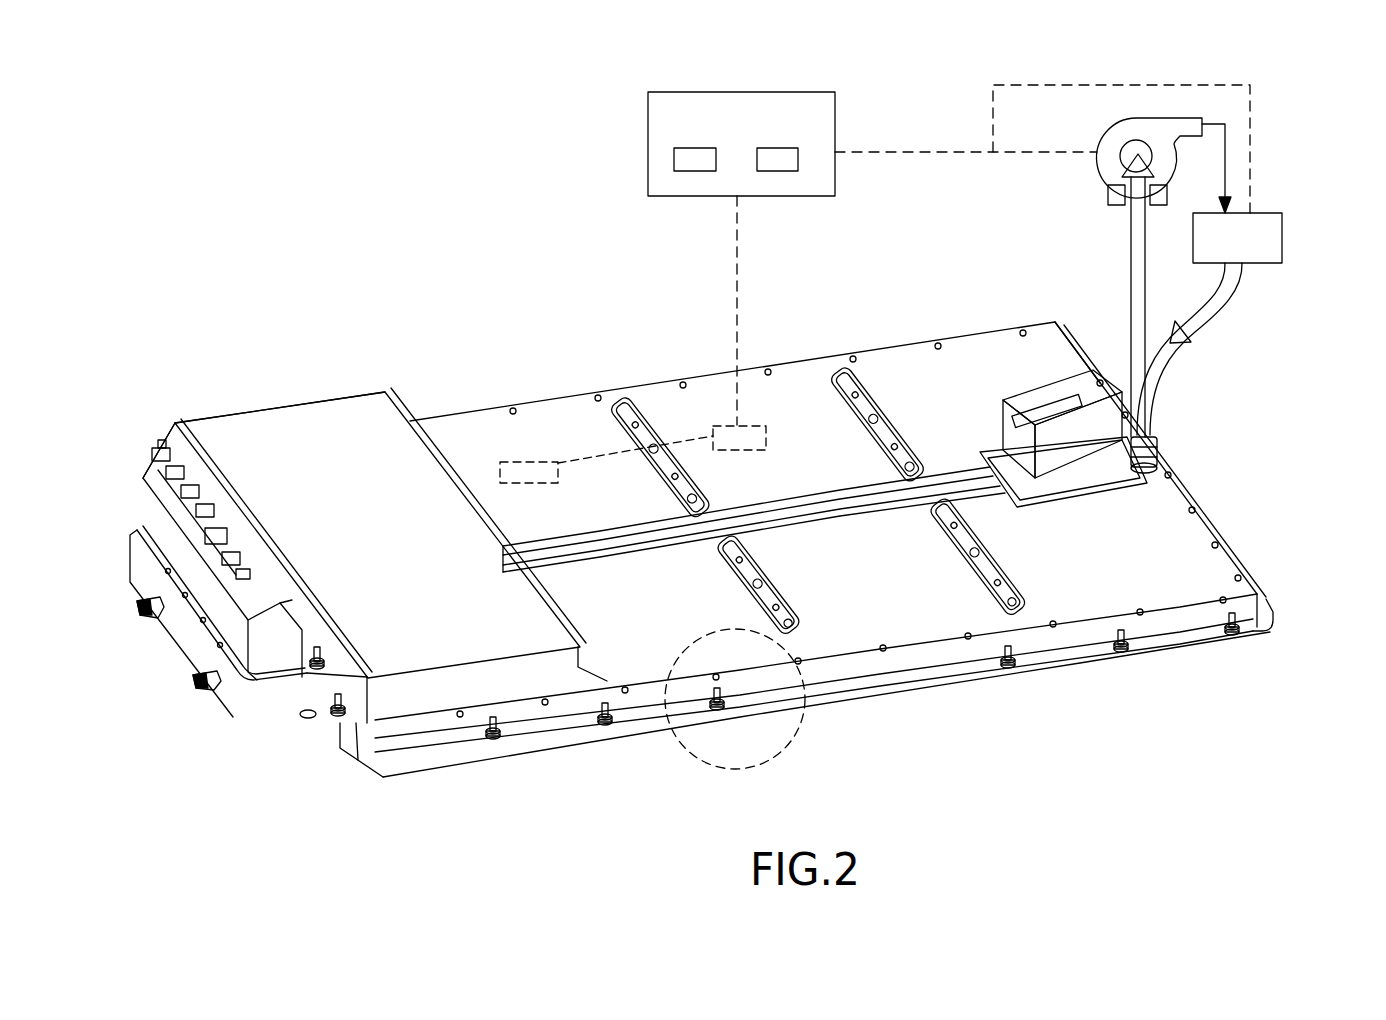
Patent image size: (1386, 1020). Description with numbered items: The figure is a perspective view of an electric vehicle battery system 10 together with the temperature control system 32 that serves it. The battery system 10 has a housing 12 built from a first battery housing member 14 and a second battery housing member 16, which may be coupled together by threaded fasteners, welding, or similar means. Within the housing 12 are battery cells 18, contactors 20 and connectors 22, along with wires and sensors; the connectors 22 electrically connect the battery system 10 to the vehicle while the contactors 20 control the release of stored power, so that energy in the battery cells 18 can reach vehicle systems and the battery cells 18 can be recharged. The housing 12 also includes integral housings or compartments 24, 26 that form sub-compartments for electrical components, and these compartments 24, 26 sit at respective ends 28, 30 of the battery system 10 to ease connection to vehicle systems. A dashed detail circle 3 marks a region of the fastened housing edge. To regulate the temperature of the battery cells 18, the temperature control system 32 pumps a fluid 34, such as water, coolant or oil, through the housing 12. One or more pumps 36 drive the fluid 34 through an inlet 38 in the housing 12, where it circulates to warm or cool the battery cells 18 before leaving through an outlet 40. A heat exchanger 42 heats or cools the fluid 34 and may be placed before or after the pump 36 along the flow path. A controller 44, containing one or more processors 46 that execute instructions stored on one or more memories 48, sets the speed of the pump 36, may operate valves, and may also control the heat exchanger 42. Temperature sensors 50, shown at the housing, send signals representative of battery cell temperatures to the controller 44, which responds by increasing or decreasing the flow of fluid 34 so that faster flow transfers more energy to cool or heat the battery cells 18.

The detail region 3 is at (808, 719).
The battery system 10 is at (822, 262).
The housing 12 is at (1188, 373).
The first battery housing member 14 is at (748, 400).
The second battery housing member 16 is at (470, 748).
The battery cells 18 is at (740, 710).
The contactors 20 is at (130, 448).
The connectors 22 is at (1115, 345).
The integral housing/compartment 24 is at (160, 653).
The integral housing/compartment 26 is at (1212, 440).
The end 28 is at (240, 708).
The end 30 is at (1075, 345).
The temperature control system 32 is at (1298, 117).
The fluid 34 is at (1228, 160).
The pump 36 is at (1102, 130).
The inlet 38 is at (1165, 455).
The outlet 40 is at (1132, 437).
The heat exchanger 42 is at (1283, 238).
The controller 44 is at (673, 113).
The processor 46 is at (683, 158).
The memory 48 is at (784, 157).
The temperature sensors 50 is at (538, 458).